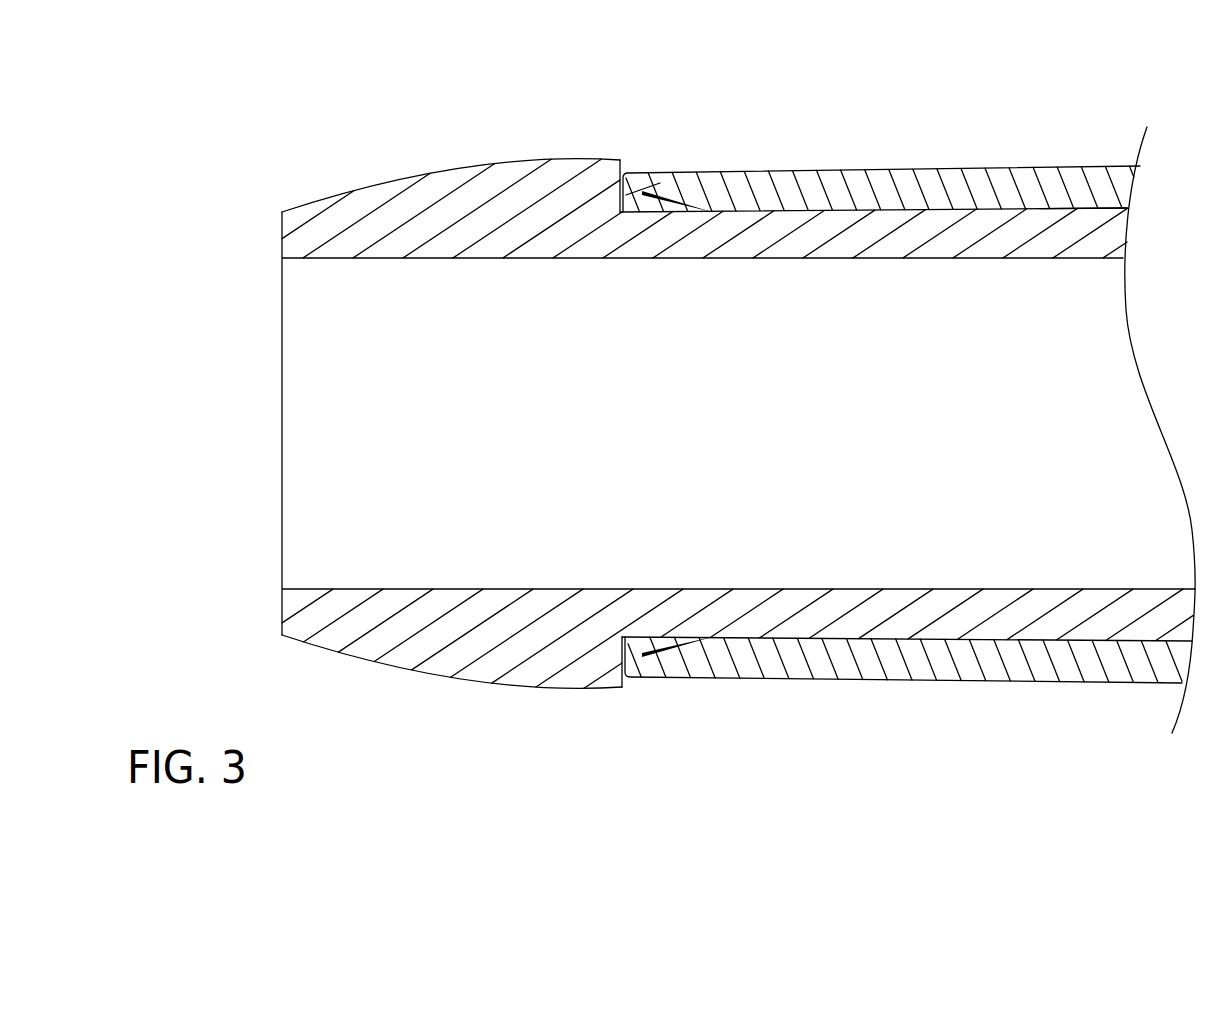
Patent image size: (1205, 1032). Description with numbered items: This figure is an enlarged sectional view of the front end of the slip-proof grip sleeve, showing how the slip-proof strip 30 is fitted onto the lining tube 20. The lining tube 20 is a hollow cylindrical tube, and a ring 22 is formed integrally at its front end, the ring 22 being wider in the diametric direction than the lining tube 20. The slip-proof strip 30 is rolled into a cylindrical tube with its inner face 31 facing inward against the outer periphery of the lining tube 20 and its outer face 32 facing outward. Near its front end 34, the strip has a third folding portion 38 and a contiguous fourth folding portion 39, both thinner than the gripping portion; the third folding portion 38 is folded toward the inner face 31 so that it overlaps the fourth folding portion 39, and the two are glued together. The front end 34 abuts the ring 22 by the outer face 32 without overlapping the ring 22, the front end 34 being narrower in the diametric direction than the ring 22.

The lining tube 20 is at (918, 238).
The ring 22 is at (414, 205).
The slip-proof strip 30 is at (902, 359).
The inner face 31 is at (1068, 203).
The outer face 32 is at (976, 168).
The front end 34 is at (600, 171).
The third folding portion 38 is at (684, 212).
The fourth folding portion 39 is at (665, 187).